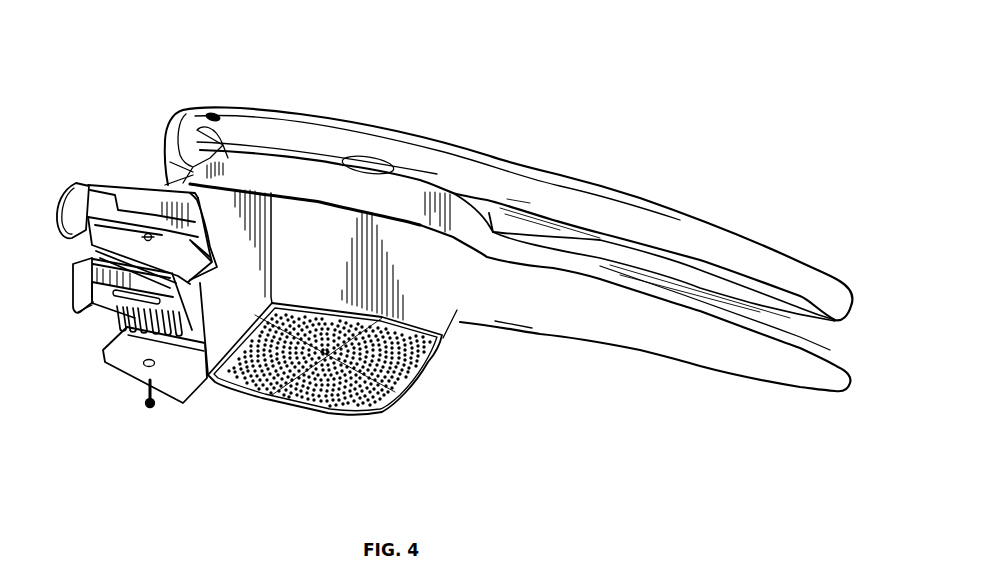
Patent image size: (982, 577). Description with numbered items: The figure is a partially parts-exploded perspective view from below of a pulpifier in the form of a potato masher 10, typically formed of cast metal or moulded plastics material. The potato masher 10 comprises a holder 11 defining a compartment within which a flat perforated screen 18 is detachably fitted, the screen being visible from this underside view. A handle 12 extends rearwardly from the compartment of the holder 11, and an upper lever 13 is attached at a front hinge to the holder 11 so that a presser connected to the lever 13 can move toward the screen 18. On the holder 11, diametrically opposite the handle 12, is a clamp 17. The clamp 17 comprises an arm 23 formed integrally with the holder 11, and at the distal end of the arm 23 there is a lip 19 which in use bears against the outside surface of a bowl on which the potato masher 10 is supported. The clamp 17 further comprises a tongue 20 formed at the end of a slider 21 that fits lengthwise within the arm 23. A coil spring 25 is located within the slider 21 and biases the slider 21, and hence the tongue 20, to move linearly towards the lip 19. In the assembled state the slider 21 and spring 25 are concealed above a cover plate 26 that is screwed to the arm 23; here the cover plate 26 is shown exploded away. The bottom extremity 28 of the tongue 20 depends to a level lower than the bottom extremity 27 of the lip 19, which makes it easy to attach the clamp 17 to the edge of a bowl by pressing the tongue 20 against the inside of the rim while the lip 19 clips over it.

The potato masher 10 is at (673, 110).
The holder 11 is at (440, 308).
The handle 12 is at (747, 370).
The upper lever 13 is at (767, 262).
The clamp 17 is at (108, 175).
The flat perforated screen 18 is at (324, 388).
The lip 19 is at (62, 193).
The tongue 20 is at (90, 281).
The slider 21 is at (100, 293).
The arm 23 is at (135, 200).
The coil spring 25 is at (116, 318).
The cover plate 26 is at (133, 360).
The bottom extremity of the lip 27 is at (77, 262).
The bottom extremity of the tongue 28 is at (80, 308).